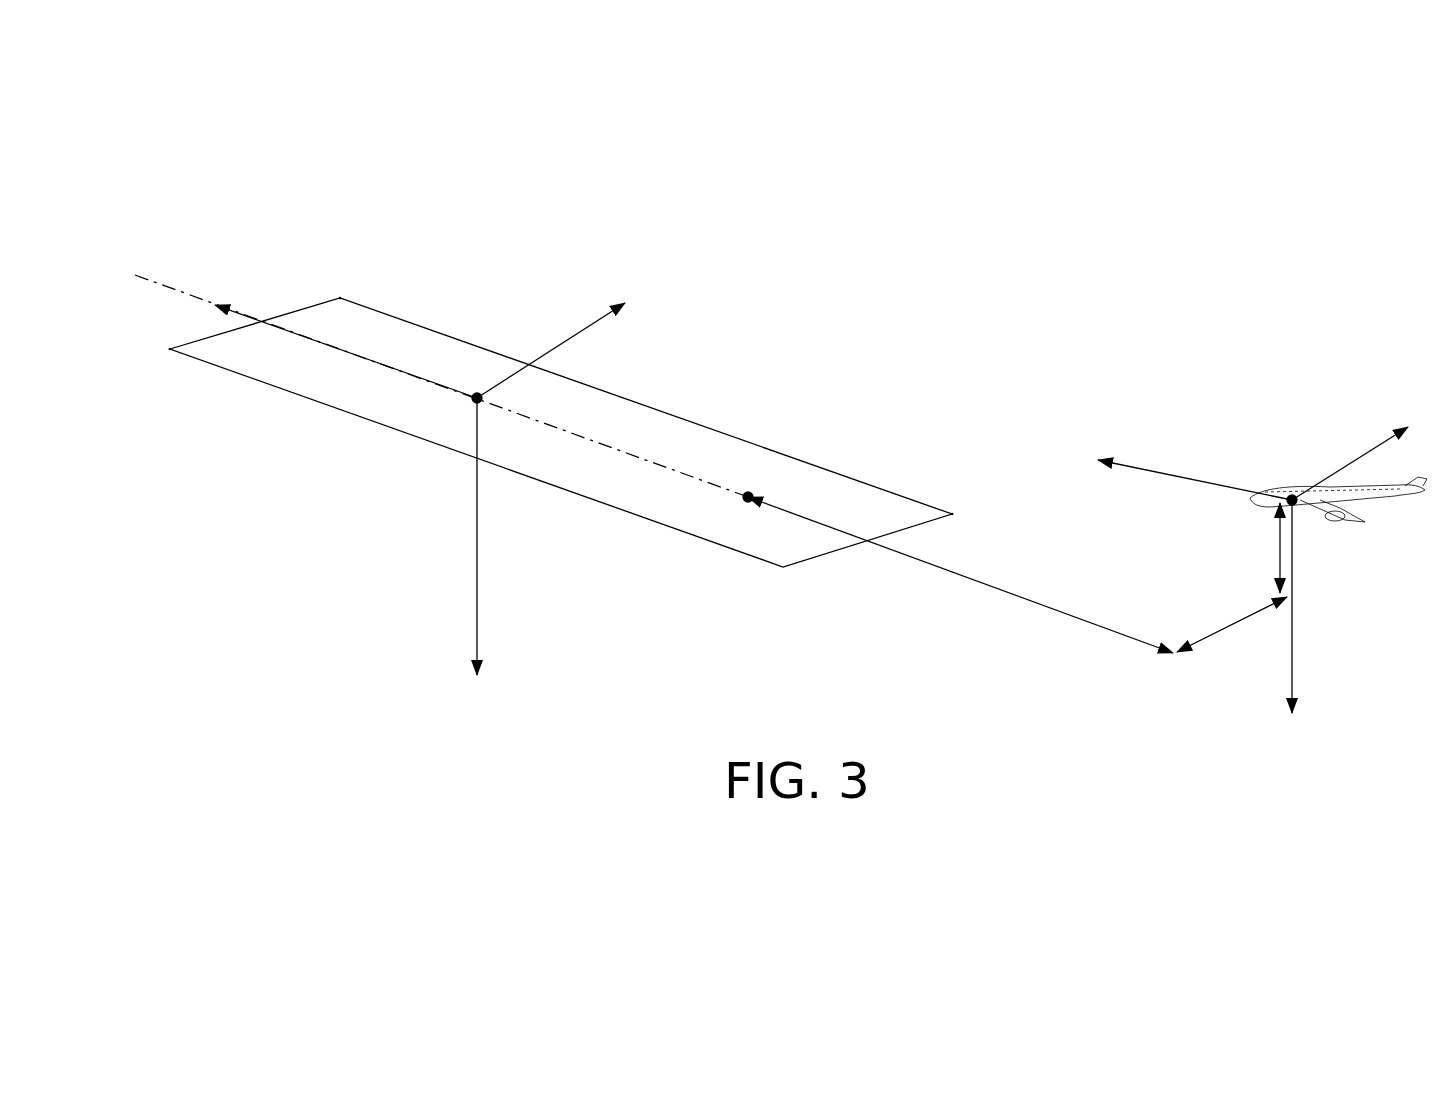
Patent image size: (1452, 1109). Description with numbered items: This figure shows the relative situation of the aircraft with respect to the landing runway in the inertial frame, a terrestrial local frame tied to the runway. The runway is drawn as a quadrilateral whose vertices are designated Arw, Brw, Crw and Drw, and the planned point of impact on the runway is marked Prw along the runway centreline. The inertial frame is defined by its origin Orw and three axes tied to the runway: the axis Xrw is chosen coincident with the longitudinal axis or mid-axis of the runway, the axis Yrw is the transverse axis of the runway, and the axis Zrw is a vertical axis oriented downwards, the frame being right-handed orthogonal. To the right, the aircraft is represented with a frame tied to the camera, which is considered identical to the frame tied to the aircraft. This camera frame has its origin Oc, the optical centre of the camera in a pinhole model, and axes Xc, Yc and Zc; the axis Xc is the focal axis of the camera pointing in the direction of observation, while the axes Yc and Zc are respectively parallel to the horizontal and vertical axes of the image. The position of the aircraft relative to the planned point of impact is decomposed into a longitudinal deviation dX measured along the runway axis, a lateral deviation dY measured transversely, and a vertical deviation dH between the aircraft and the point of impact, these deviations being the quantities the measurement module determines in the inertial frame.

The runway vertex Arw is at (561, 450).
The runway vertex Brw is at (153, 363).
The runway vertex Crw is at (972, 519).
The runway vertex Drw is at (355, 282).
The inertial frame origin Orw is at (465, 372).
The longitudinal runway axis Xrw is at (343, 330).
The transverse runway axis Yrw is at (589, 335).
The vertical runway axis Zrw is at (515, 548).
The planned point of impact Prw is at (753, 479).
The longitudinal deviation dX is at (960, 575).
The lateral deviation dY is at (1232, 638).
The vertical deviation dH is at (1243, 548).
The camera frame origin Oc is at (1338, 486).
The camera focal axis Xc is at (1195, 458).
The camera horizontal axis Yc is at (1364, 440).
The camera vertical axis Zc is at (1321, 616).